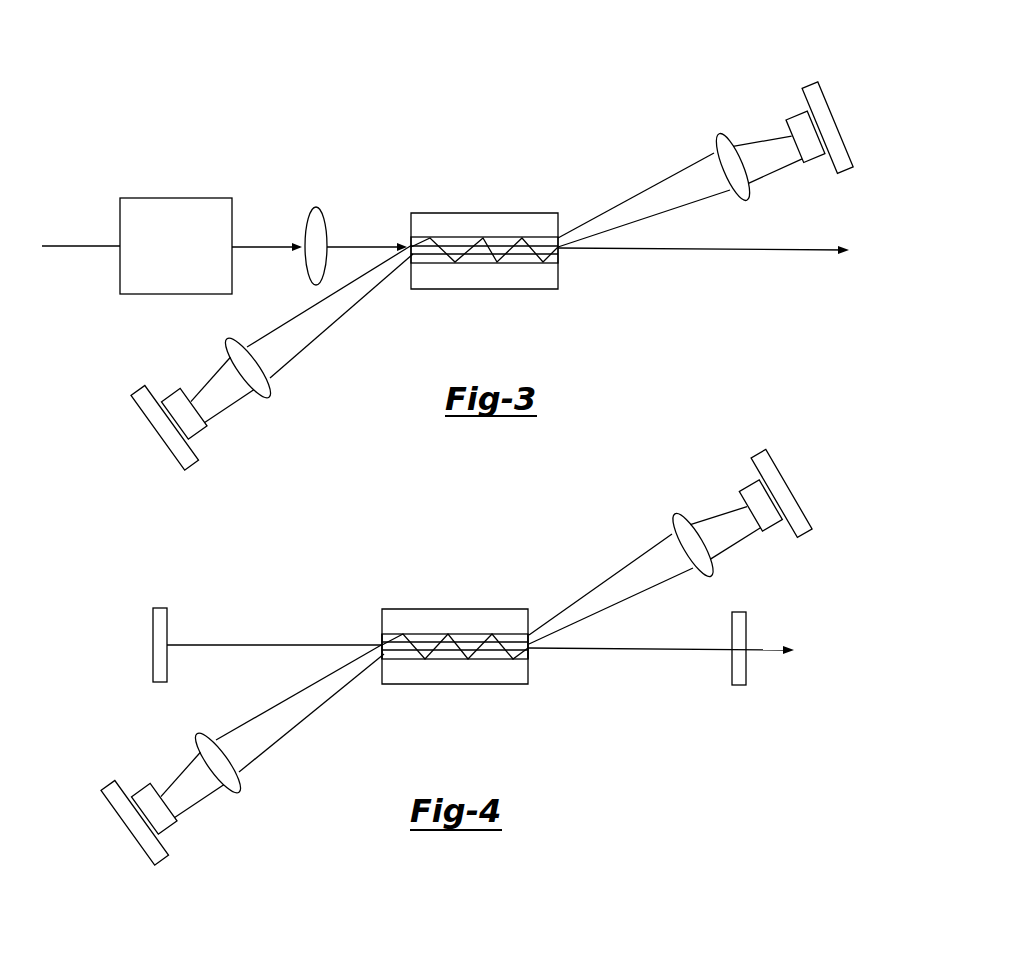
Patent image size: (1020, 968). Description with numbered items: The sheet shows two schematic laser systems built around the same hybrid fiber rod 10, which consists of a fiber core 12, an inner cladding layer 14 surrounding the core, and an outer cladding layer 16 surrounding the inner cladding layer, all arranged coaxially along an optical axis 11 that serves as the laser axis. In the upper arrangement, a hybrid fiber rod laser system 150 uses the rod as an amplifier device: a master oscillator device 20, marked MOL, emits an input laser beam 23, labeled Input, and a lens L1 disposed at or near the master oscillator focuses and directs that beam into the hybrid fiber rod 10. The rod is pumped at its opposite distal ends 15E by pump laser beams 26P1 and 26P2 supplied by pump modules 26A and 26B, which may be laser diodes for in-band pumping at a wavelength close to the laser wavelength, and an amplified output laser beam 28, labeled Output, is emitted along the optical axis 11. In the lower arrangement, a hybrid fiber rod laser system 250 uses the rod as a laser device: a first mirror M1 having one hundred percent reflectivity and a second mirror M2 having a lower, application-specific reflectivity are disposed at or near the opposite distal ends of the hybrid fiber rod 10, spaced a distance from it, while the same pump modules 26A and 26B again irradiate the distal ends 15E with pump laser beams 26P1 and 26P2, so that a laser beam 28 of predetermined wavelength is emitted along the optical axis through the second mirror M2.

In FIG. 3, the hybrid fiber rod 10 is at (537, 192).
In FIG. 4, the hybrid fiber rod 10 is at (509, 586).
In FIG. 3, the optical axis 11 is at (59, 244).
In FIG. 3, the fiber core 12 is at (431, 254).
In FIG. 4, the fiber core 12 is at (402, 650).
In FIG. 3, the inner cladding layer 14 is at (483, 237).
In FIG. 4, the inner cladding layer 14 is at (455, 634).
In FIG. 4, the distal ends 15E is at (378, 678).
In FIG. 3, the outer cladding layer 16 is at (504, 281).
In FIG. 4, the outer cladding layer 16 is at (473, 676).
In FIG. 3, the master oscillator device 20 is at (176, 198).
In FIG. 3, the input laser beam 23 is at (263, 249).
In FIG. 3, the pump module 26A is at (270, 475).
In FIG. 4, the pump module 26A is at (240, 868).
In FIG. 3, the pump module 26B is at (843, 80).
In FIG. 4, the pump module 26B is at (787, 447).
In FIG. 3, the pump laser beam 26P1 is at (296, 343).
In FIG. 3, the pump laser beam 26P2 is at (675, 192).
In FIG. 3, the output laser beam 28 is at (757, 251).
In FIG. 4, the output laser beam 28 is at (766, 651).
In FIG. 3, the hybrid fiber rod laser system 150 is at (725, 31).
In FIG. 4, the hybrid fiber rod laser system 250 is at (578, 471).
In FIG. 3, the lens L1 is at (316, 206).
In FIG. 4, the first mirror M1 is at (160, 606).
In FIG. 4, the second mirror M2 is at (741, 600).